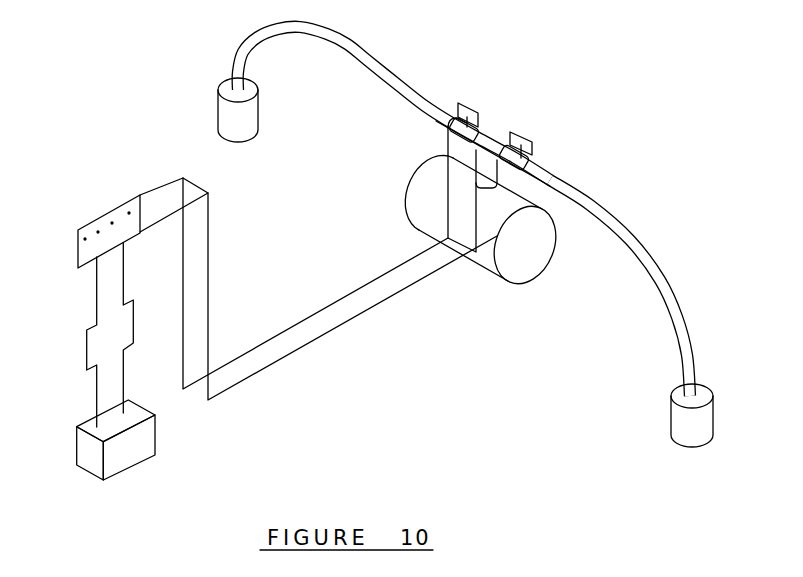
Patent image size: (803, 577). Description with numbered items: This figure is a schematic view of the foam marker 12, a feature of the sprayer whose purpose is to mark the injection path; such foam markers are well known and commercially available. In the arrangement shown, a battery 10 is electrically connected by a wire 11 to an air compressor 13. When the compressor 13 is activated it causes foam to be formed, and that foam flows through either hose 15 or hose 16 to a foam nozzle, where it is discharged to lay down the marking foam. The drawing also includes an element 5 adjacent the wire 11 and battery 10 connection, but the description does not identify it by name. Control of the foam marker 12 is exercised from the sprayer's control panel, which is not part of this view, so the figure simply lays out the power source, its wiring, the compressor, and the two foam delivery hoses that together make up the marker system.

The mounting plate 5 is at (101, 215).
The battery 10 is at (139, 464).
The wire 11 is at (119, 280).
The foam marker 12 is at (487, 127).
The air compressor 13 is at (496, 277).
The hose 15 is at (363, 46).
The hose 16 is at (636, 239).